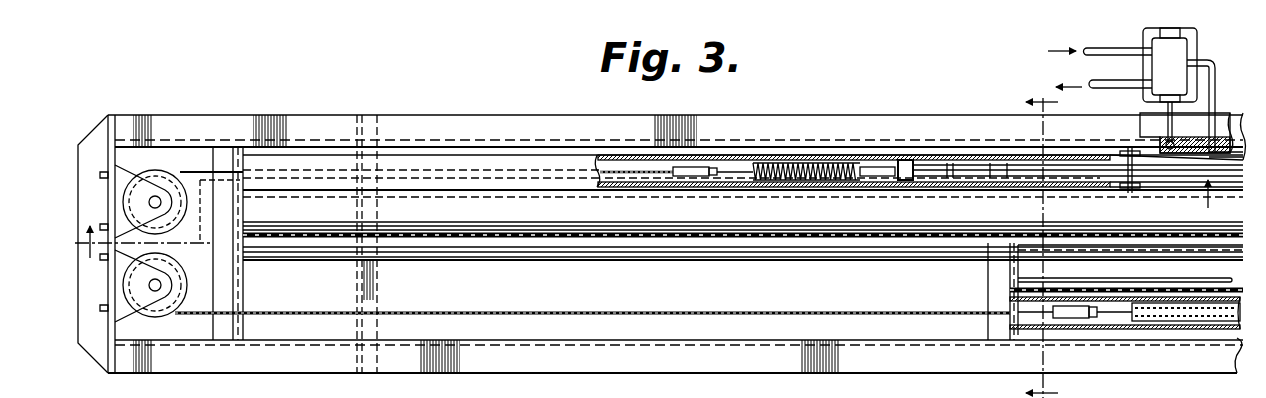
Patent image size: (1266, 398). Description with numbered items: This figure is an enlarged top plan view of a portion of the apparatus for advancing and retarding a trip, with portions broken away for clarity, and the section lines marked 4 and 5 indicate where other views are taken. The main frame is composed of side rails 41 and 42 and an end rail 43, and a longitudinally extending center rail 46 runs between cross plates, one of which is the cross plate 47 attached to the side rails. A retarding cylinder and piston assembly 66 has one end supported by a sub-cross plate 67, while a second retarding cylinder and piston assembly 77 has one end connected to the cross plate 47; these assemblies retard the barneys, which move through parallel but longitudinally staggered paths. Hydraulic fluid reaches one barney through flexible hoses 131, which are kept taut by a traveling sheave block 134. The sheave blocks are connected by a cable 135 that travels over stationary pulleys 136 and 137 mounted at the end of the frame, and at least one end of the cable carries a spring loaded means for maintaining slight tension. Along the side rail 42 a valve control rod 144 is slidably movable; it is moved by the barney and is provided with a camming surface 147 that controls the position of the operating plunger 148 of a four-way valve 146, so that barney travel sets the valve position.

The side rail 41 is at (530, 362).
The side rail 42 is at (523, 118).
The end rail 43 is at (98, 345).
The center rail 46 is at (584, 258).
The cross plate 47 is at (232, 297).
The retarding cylinder and piston assembly 66 is at (1176, 276).
The sub-cross plate 67 is at (990, 279).
The retarding cylinder and piston assembly 77 is at (716, 220).
The flexible hoses 131 is at (1158, 163).
The traveling sheave block 134 is at (908, 160).
The cable 135 is at (470, 312).
The stationary pulley 136 is at (178, 272).
The stationary pulley 137 is at (158, 172).
The valve control rod 144 is at (1236, 96).
The four-way valve 146 is at (1160, 62).
The camming surface 147 is at (1188, 145).
The operating plunger 148 is at (1165, 120).
The section line 4- 4 is at (644, 231).
The section line 5- 5 is at (1041, 240).